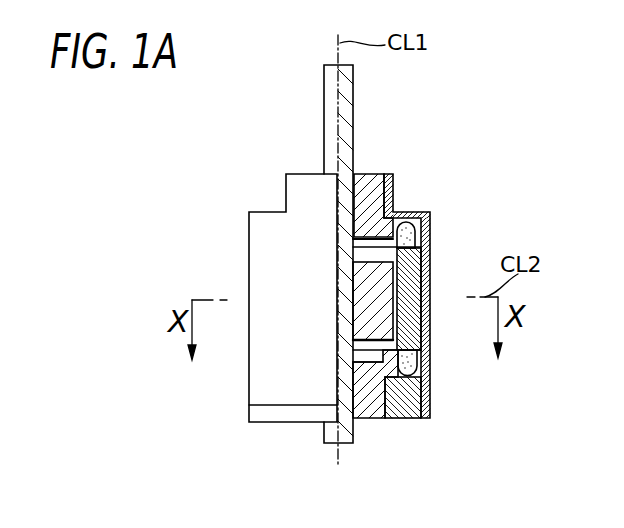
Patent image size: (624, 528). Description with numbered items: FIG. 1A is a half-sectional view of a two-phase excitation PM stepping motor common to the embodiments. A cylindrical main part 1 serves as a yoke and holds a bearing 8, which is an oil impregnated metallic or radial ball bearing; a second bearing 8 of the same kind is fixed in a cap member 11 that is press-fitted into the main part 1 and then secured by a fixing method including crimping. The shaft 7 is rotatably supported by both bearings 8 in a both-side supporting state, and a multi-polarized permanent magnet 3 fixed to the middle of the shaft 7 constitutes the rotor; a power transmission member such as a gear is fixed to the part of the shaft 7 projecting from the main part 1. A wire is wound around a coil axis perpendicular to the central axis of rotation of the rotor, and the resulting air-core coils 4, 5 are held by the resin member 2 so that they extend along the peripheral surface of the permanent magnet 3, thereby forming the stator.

The cylindrical main part 1 is at (260, 238).
The resin member 2 is at (421, 277).
The multi-polarized permanent magnet 3 is at (378, 322).
The air-core coil 4 is at (438, 293).
The air-core coil 5 is at (430, 205).
The shaft 7 is at (354, 93).
The bearing 8 is at (377, 174).
The cap member 11 is at (413, 400).